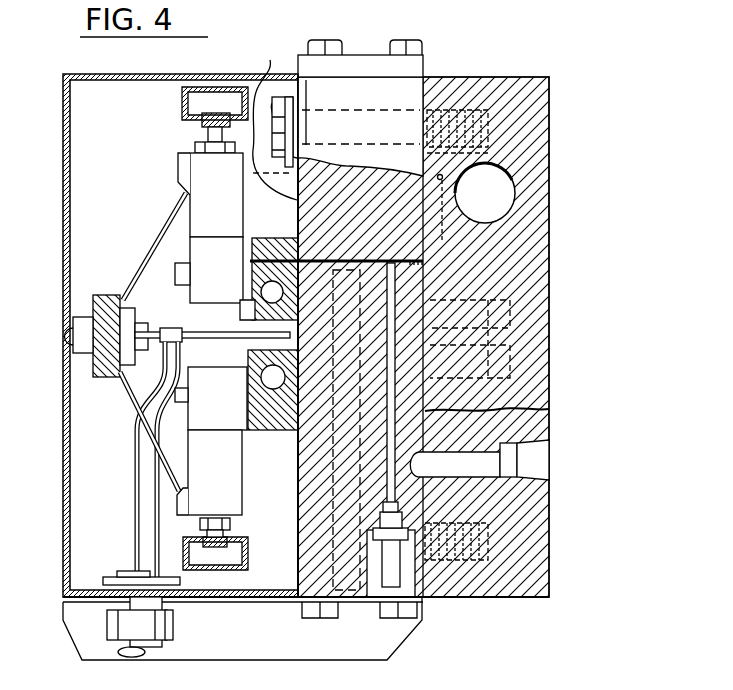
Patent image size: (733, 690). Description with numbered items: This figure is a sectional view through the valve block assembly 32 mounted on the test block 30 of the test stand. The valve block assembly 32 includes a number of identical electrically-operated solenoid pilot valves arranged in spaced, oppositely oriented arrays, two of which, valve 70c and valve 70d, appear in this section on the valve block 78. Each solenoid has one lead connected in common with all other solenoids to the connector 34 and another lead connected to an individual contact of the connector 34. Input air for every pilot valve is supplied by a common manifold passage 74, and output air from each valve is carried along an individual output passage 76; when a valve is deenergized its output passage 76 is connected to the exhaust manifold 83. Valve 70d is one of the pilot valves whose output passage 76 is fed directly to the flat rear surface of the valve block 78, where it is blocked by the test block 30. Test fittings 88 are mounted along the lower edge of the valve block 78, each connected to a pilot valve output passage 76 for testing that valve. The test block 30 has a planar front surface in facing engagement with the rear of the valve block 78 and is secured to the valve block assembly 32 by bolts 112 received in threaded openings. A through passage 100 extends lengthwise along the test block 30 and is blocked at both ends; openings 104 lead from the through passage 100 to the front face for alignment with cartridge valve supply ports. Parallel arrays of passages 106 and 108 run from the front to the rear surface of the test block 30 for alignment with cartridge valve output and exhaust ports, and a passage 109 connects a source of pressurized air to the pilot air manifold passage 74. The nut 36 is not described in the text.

The test block 30 is at (529, 72).
The valve block assembly 32 is at (88, 74).
The connector 34 is at (132, 612).
The nut 36 is at (150, 647).
The solenoid pilot valve 70c is at (228, 479).
The solenoid pilot valve 70d is at (205, 170).
The common manifold passage 74 is at (329, 381).
The output passage 76 is at (384, 264).
The valve block 78 is at (410, 100).
The exhaust manifold 83 is at (182, 103).
The test fitting 88 is at (395, 565).
The through passage 100 is at (508, 185).
The opening 104 is at (457, 335).
The passage 106 is at (470, 325).
The passage 108 is at (487, 398).
The passage 109 is at (535, 470).
The bolt 112 is at (271, 119).